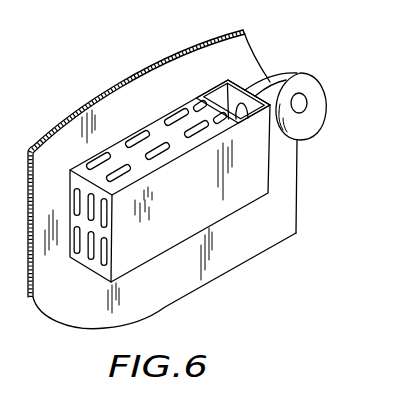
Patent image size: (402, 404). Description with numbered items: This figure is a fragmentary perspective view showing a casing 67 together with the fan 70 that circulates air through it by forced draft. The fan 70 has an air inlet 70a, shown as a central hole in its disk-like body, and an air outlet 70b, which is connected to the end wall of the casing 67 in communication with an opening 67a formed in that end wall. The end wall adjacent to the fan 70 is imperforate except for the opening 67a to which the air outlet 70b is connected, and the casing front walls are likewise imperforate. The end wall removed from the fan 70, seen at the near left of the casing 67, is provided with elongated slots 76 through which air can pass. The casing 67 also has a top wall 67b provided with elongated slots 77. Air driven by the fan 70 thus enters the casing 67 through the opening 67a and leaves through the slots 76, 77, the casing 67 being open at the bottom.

The casing 67 is at (224, 216).
The opening 67a is at (224, 88).
The top wall 67b is at (191, 110).
The fan 70 is at (323, 84).
The air inlet 70a is at (307, 106).
The air outlet 70b is at (255, 81).
The elongated slots 76 is at (103, 265).
The elongated slots 77 is at (131, 139).